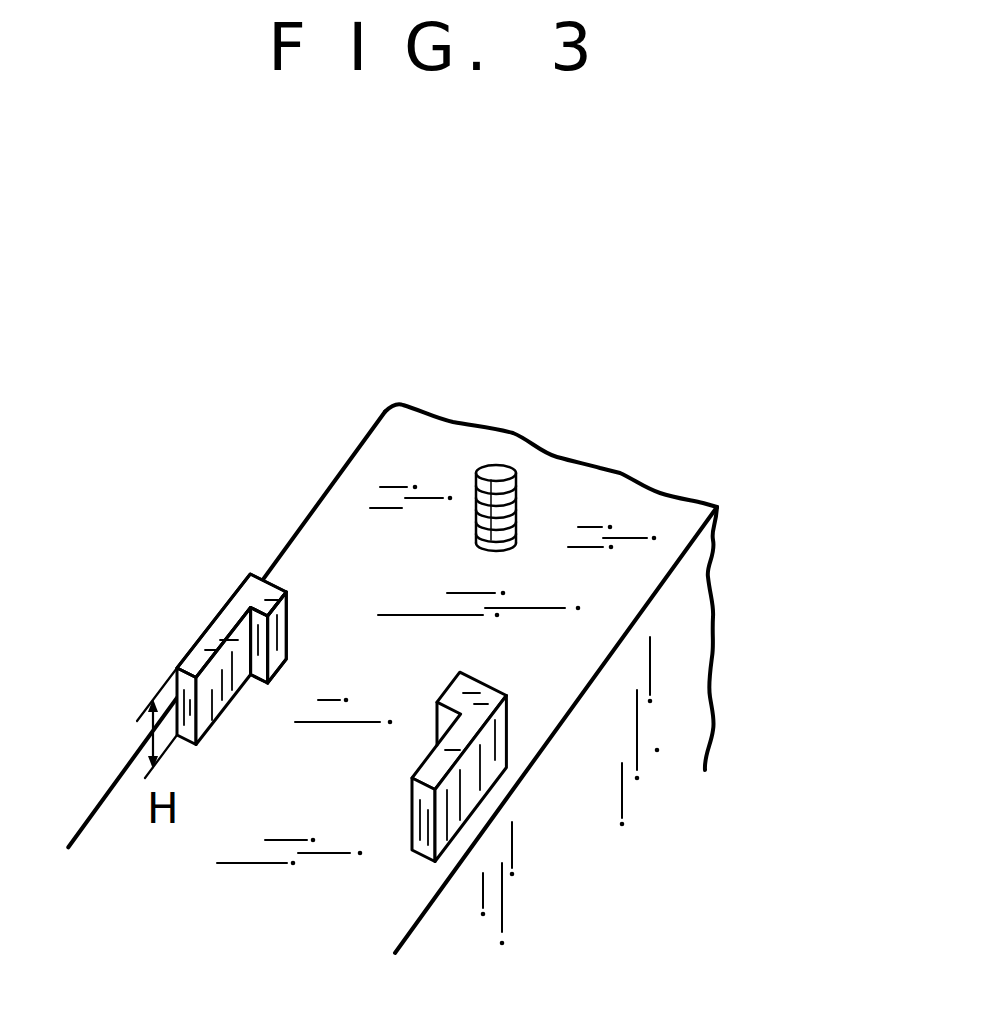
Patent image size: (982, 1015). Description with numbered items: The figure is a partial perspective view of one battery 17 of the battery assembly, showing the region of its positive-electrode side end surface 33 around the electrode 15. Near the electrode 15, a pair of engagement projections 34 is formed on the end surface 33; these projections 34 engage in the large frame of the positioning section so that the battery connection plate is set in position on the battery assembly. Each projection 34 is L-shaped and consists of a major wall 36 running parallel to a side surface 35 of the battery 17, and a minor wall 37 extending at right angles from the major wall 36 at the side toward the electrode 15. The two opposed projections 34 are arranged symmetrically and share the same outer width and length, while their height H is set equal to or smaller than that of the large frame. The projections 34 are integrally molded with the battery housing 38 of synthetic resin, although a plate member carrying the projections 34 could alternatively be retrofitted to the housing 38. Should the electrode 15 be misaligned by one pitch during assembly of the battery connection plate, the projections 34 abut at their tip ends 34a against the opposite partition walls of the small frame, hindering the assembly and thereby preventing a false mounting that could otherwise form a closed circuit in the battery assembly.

The electrode 15 is at (480, 467).
The battery 17 is at (293, 500).
The positive-electrode side end surface 33 is at (640, 517).
The engagement projection 34 is at (192, 644).
The tip end 34a is at (230, 615).
The side surface 35 is at (688, 648).
The major wall 36 is at (222, 688).
The minor wall 37 is at (279, 580).
The battery housing 38 is at (110, 787).